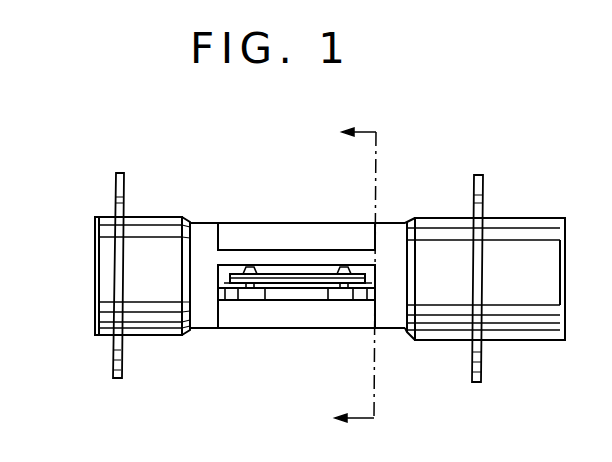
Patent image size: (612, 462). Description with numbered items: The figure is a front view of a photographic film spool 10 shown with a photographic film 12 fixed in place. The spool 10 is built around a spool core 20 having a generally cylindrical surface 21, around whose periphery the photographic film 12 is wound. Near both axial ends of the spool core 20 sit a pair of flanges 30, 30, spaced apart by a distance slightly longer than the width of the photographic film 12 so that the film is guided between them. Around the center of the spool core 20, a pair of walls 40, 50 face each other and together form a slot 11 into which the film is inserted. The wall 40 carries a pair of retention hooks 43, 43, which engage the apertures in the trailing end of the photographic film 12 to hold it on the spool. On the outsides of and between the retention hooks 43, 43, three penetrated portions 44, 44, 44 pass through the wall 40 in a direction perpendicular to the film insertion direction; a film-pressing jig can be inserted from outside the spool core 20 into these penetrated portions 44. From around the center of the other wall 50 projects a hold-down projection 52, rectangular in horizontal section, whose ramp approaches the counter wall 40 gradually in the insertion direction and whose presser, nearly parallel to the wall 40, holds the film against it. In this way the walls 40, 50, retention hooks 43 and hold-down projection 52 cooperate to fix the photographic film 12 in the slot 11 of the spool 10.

The photographic film spool 10 is at (242, 163).
The slot 11 is at (207, 228).
The photographic film 12 is at (237, 250).
The spool core 20 is at (224, 265).
The cylindrical surface 21 is at (155, 215).
The flange 30 is at (113, 192).
The wall 40 is at (270, 300).
The retention hook 43 is at (250, 267).
The penetrated portion 44 is at (226, 300).
The wall 50 is at (283, 250).
The hold-down projection 52 is at (306, 275).